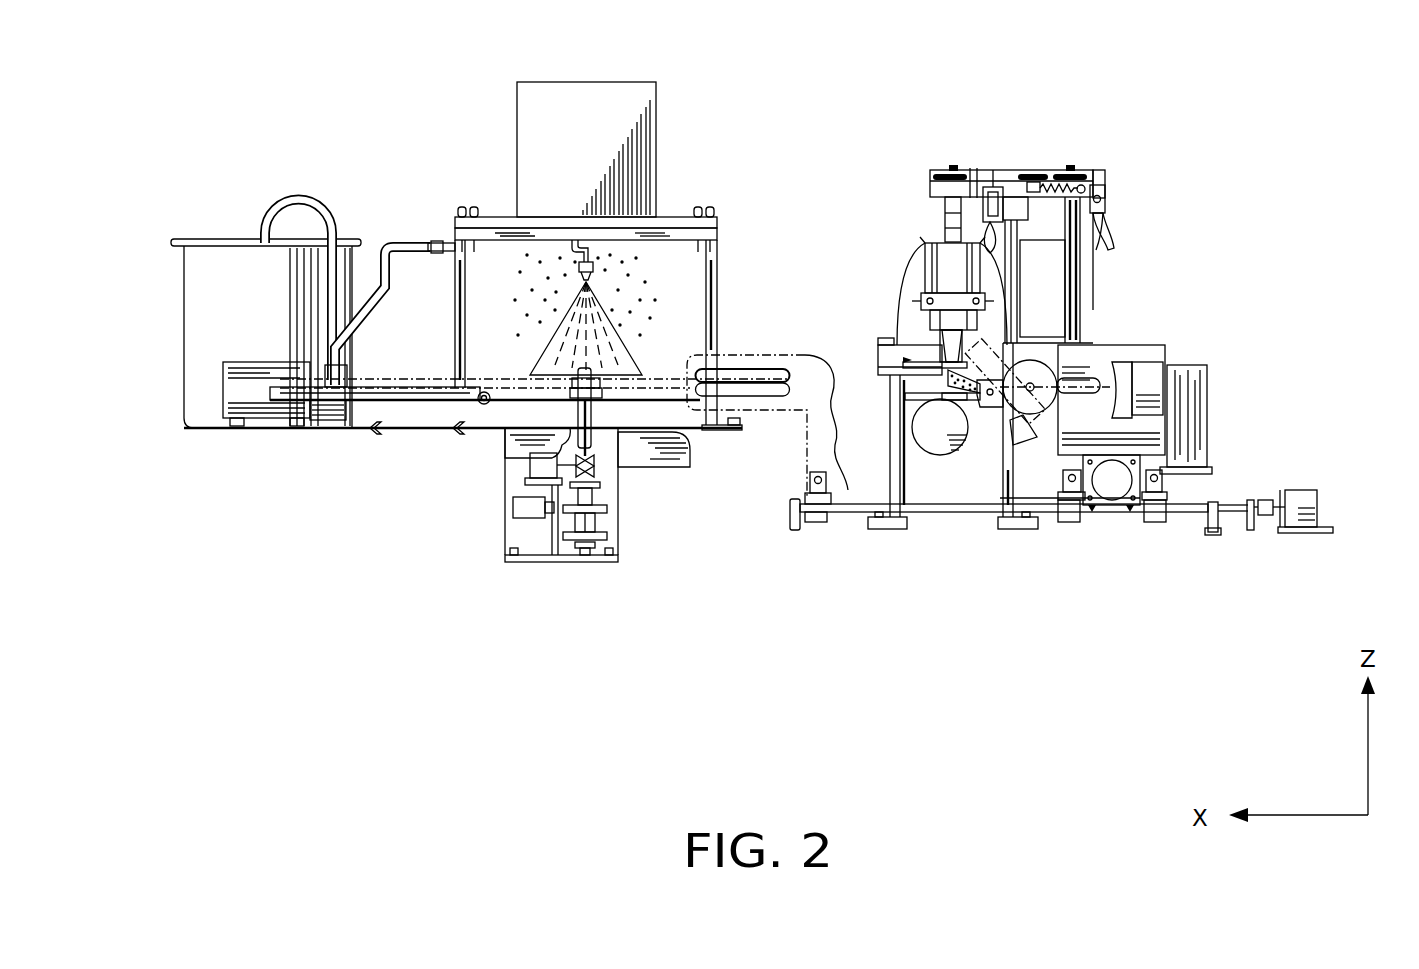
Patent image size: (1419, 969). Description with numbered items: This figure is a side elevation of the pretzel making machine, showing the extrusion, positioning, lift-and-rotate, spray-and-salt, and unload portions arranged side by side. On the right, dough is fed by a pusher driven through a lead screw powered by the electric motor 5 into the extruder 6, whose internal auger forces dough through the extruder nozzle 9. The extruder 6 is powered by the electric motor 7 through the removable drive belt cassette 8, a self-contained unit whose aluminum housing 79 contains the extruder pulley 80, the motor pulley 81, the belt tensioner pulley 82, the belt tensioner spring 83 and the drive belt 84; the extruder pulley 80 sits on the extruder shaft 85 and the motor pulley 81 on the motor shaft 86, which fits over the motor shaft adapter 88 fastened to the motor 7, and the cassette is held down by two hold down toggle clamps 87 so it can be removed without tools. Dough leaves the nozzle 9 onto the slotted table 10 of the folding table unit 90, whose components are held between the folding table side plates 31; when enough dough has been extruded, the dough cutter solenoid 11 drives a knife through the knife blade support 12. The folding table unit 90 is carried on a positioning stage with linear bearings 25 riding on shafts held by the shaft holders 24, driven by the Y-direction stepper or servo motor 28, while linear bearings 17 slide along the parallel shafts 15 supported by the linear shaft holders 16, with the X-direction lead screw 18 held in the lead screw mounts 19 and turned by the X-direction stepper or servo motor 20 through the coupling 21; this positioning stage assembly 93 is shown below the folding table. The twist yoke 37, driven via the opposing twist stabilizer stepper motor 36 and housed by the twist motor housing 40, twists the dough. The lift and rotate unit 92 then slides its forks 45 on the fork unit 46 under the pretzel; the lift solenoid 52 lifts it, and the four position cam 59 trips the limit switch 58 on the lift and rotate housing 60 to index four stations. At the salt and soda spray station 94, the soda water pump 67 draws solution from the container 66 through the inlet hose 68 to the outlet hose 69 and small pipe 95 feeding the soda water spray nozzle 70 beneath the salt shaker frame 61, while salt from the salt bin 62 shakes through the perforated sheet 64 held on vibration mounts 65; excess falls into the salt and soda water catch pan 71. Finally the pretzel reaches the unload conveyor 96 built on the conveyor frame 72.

The electric motor 5 is at (937, 430).
The extruder 6 is at (940, 266).
The electric motor 7 is at (1048, 291).
The drive belt cassette 8 is at (1020, 152).
The extruder nozzle 9 is at (898, 318).
The slotted table 10 is at (983, 415).
The dough cutter solenoid 11 is at (923, 343).
The knife blade support 12 is at (885, 358).
The parallel shafts 15 is at (853, 515).
The linear shaft holders 16 is at (790, 512).
The linear bearings 17 is at (1068, 522).
The X-direction lead screw 18 is at (1230, 513).
The lead screw mounts 19 is at (1252, 530).
The X-direction stepper or servo motor 20 is at (1300, 502).
The X-direction stepper or servo motor coupling 21 is at (1268, 500).
The shaft holders 24 is at (1063, 486).
The linear bearings 25 is at (1066, 476).
The Y-direction stepper or servo motor 28 is at (1112, 483).
The folding table side plates 31 is at (1100, 372).
The opposing twist stabilizer stepper motor 36 is at (1122, 378).
The twist yoke 37 is at (1152, 373).
The twist motor housing 40 is at (1190, 406).
The forks 45 is at (567, 396).
The fork unit 46 is at (583, 430).
The lift solenoid 52 is at (543, 468).
The limit switch 58 is at (520, 508).
The four position cam 59 is at (607, 508).
The lift and rotate housing 60 is at (505, 548).
The salt shaker frame 61 is at (712, 270).
The salt bin 62 is at (600, 110).
The perforated sheet 64 is at (692, 218).
The vibration mounts 65 is at (462, 218).
The container 66 is at (223, 277).
The soda water pump 67 is at (243, 385).
The inlet hose 68 is at (302, 197).
The outlet hose 69 is at (392, 245).
The soda water spray nozzle 70 is at (592, 268).
The salt and soda water catch pan 71 is at (643, 437).
The conveyor frame 72 is at (357, 417).
The housing 79 is at (938, 170).
The extruder pulley 80 is at (930, 178).
The motor pulley 81 is at (1093, 178).
The belt tensioner pulley 82 is at (1043, 180).
The belt tensioner spring 83 is at (1085, 190).
The drive belt 84 is at (970, 170).
The extruder shaft 85 is at (945, 212).
The motor shaft 86 is at (1105, 253).
The hold down toggle clamps 87 is at (993, 187).
The motor shaft adapter 88 is at (1098, 273).
The folding table unit 90 is at (1242, 388).
The lift and rotate unit 92 is at (560, 592).
The conveyor drive 93 is at (1081, 553).
The salt and soda spray station 94 is at (488, 142).
The small pipe 95 is at (497, 248).
The unload conveyor 96 is at (404, 448).